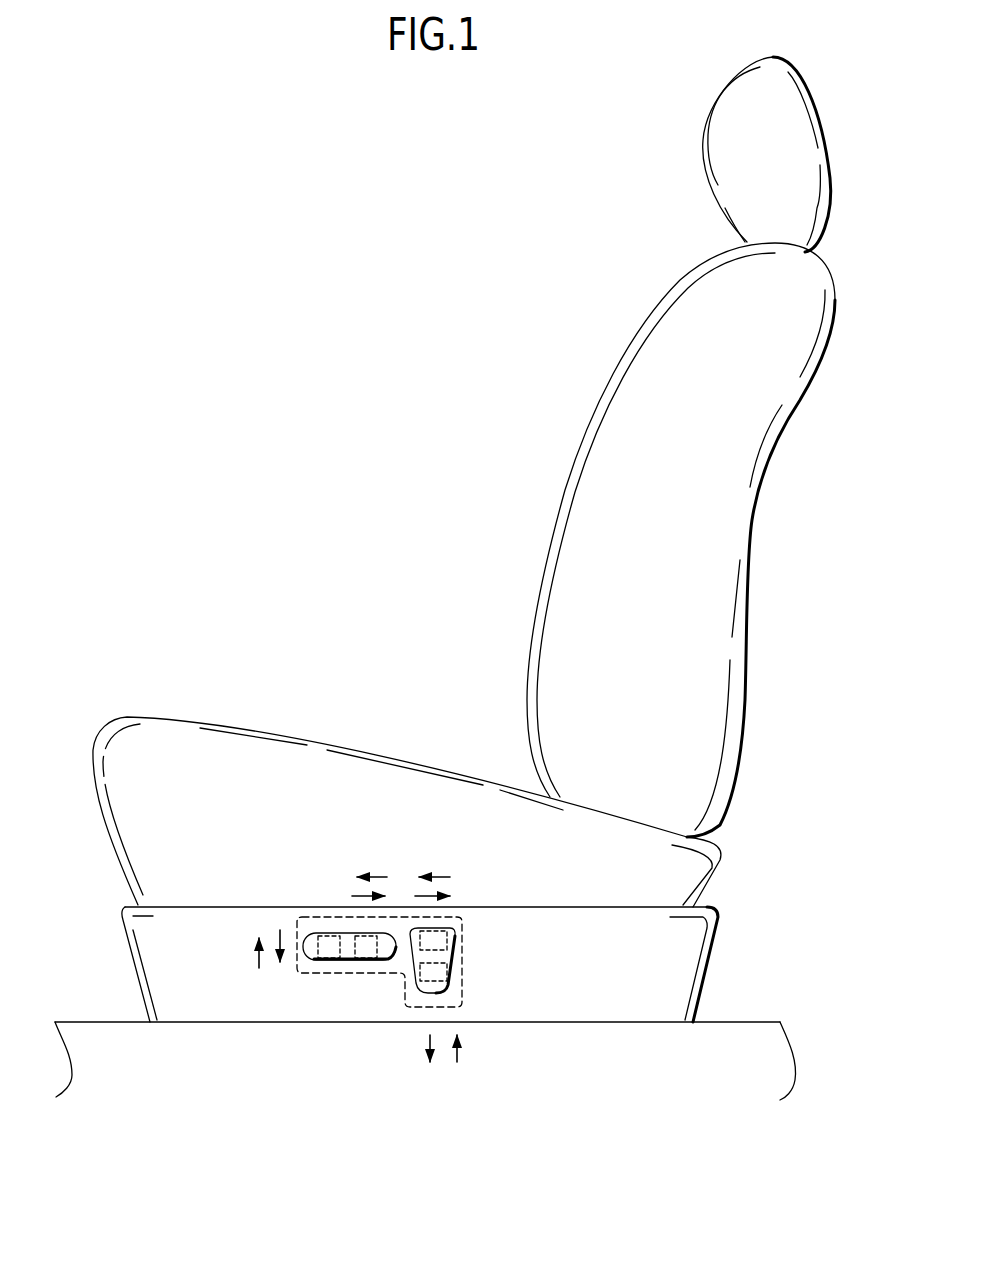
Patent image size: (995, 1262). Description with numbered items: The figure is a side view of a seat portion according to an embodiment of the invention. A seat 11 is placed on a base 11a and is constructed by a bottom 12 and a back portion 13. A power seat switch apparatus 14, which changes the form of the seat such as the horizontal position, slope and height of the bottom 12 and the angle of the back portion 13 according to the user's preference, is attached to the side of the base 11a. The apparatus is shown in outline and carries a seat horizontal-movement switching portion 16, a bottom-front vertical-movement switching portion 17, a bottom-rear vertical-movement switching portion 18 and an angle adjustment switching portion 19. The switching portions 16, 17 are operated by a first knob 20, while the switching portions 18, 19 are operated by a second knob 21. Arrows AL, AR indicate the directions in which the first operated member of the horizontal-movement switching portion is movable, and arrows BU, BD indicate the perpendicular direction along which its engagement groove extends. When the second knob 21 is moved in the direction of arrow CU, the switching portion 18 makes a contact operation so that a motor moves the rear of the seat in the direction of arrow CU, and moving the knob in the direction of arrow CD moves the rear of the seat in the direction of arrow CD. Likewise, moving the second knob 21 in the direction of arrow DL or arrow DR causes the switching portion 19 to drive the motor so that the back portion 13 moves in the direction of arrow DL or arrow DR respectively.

The seat 11 is at (445, 578).
The base 11a is at (718, 945).
The bottom 12 is at (298, 738).
The back portion 13 is at (558, 512).
The power seat switch apparatus 14 is at (417, 972).
The seat horizontal-movement switching portion 16 is at (360, 965).
The bottom-front vertical-movement switching portion 17 is at (323, 965).
The bottom-rear vertical-movement switching portion 18 is at (452, 966).
The angle adjustment switching portion 19 is at (455, 931).
The first knob 20 is at (326, 1016).
The second knob 21 is at (480, 919).
The arrow AL is at (384, 876).
The arrow AR is at (352, 895).
The arrow DL is at (448, 876).
The arrow DR is at (418, 895).
The arrow BU is at (258, 972).
The arrow BD is at (281, 928).
The arrow CU is at (458, 1068).
The arrow CD is at (430, 1066).